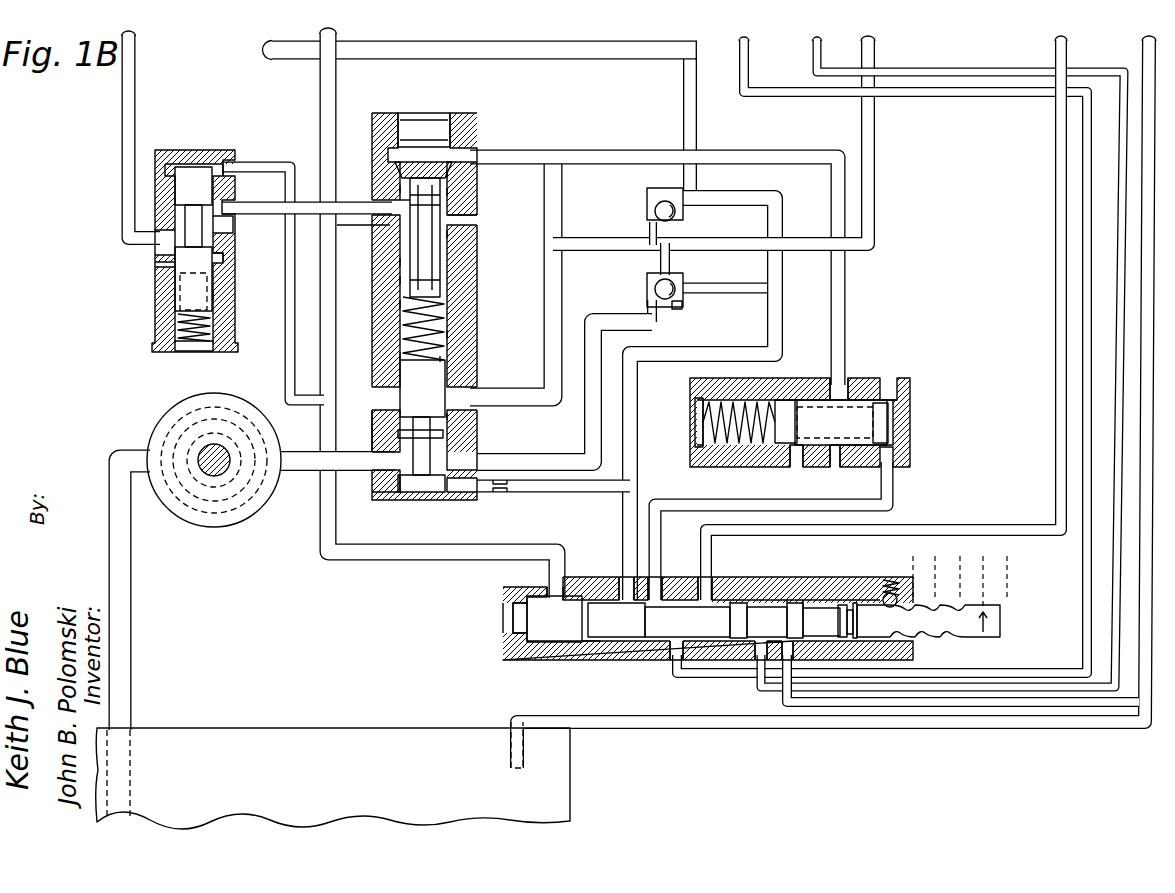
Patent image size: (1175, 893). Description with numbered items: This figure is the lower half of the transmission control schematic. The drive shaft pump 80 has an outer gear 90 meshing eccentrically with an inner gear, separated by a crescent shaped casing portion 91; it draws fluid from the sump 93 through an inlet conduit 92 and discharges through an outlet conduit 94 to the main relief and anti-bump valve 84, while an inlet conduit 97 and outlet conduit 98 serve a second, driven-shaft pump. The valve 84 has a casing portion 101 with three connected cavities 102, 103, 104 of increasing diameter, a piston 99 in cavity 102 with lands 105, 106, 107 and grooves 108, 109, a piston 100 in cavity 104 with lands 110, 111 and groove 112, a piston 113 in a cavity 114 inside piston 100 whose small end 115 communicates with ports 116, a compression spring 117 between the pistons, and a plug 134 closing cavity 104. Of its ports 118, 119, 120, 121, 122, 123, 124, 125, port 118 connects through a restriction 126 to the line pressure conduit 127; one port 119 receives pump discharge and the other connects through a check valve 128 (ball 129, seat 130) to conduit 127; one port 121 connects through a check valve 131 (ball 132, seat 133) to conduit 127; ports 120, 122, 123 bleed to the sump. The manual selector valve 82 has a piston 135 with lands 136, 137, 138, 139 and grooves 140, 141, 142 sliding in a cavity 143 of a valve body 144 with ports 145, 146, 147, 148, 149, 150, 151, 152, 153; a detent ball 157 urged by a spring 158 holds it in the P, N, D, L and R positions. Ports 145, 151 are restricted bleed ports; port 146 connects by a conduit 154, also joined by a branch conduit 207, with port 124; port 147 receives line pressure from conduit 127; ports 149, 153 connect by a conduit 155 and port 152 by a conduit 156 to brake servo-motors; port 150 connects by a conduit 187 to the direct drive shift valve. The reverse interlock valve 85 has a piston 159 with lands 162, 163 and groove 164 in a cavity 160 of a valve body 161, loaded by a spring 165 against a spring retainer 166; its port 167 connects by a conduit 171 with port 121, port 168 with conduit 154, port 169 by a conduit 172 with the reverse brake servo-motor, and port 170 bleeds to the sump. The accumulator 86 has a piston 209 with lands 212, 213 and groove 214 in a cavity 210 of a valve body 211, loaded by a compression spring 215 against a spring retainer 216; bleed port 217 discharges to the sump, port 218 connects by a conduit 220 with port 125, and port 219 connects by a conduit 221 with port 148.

The pump 80 is at (210, 481).
The manual selector valve 82 is at (710, 617).
The main relief and anti-bump valve 84 is at (457, 305).
The reverse interlock valve 85 is at (161, 246).
The accumulator 86 is at (828, 411).
The outer gear 90 is at (180, 420).
The crescent shaped casing portion 91 is at (222, 427).
The inlet conduit 92 is at (132, 588).
The fluid sump 93 is at (302, 811).
The outlet conduit 94 is at (296, 472).
The inlet conduit 97 is at (1142, 48).
The outlet conduit 98 is at (876, 48).
The piston 99 is at (446, 372).
The piston 100 is at (456, 255).
The casing portion 101 is at (460, 113).
The cylindrical cavity 102 is at (412, 352).
The cylindrical cavity 103 is at (456, 335).
The cylindrical cavity 104 is at (400, 262).
The land 105 is at (437, 493).
The land 106 is at (444, 433).
The land 107 is at (446, 361).
The groove 108 is at (415, 493).
The groove 109 is at (452, 416).
The land 110 is at (471, 222).
The land 111 is at (456, 175).
The groove 112 is at (399, 190).
The piston 113 is at (461, 236).
The cylindrical cavity 114 is at (399, 206).
The end 115 is at (390, 161).
The ports 116 is at (446, 192).
The compression spring 117 is at (450, 305).
The port 118 is at (487, 493).
The ports 119 is at (376, 462).
The bleed port 120 is at (376, 428).
The ports 121 is at (380, 396).
The bleed port 122 is at (386, 307).
The bleed port 123 is at (391, 281).
The port 124 is at (396, 246).
The port 125 is at (478, 152).
The restriction 126 is at (505, 494).
The line pressure conduit 127 is at (268, 47).
The check valve 128 is at (657, 278).
The ball 129 is at (668, 280).
The seat 130 is at (684, 304).
The check valve 131 is at (661, 211).
The ball 132 is at (652, 214).
The seat 133 is at (686, 205).
The plug 134 is at (419, 113).
The piston 135 is at (580, 618).
The land 136 is at (590, 646).
The land 137 is at (790, 601).
The land 138 is at (808, 601).
The land 139 is at (855, 602).
The groove 140 is at (663, 630).
The groove 141 is at (747, 630).
The groove 142 is at (810, 630).
The cylindrical cavity 143 is at (838, 645).
The valve body 144 is at (504, 646).
The port 145 is at (500, 606).
The port 146 is at (550, 592).
The port 147 is at (622, 578).
The port 148 is at (662, 578).
The port 149 is at (670, 662).
The port 150 is at (706, 578).
The port 151 is at (757, 662).
The port 152 is at (770, 662).
The port 153 is at (808, 652).
The conduit 154 is at (363, 560).
The conduit 155 is at (814, 46).
The conduit 156 is at (741, 58).
The ball 157 is at (898, 600).
The spring 158 is at (890, 582).
The piston 159 is at (224, 258).
The cylindrical cavity 160 is at (174, 290).
The valve body 161 is at (226, 352).
The land 162 is at (181, 166).
The land 163 is at (222, 298).
The groove 164 is at (234, 224).
The spring 165 is at (213, 330).
The spring retainer 166 is at (183, 352).
The port 167 is at (230, 165).
The port 168 is at (236, 206).
The port 169 is at (156, 240).
The bleed port 170 is at (127, 267).
The conduit 171 is at (289, 161).
The conduit 172 is at (135, 86).
The conduit 187 is at (1054, 48).
The branch conduit 207 is at (320, 78).
The piston 209 is at (898, 401).
The cylindrical cavity 210 is at (866, 399).
The valve body 211 is at (906, 456).
The land 212 is at (889, 437).
The land 213 is at (790, 399).
The groove 214 is at (836, 458).
The compression spring 215 is at (752, 446).
The spring retainer 216 is at (692, 414).
The bleed port 217 is at (797, 458).
The port 218 is at (839, 378).
The port 219 is at (893, 470).
The conduit 220 is at (847, 275).
The conduit 221 is at (697, 503).